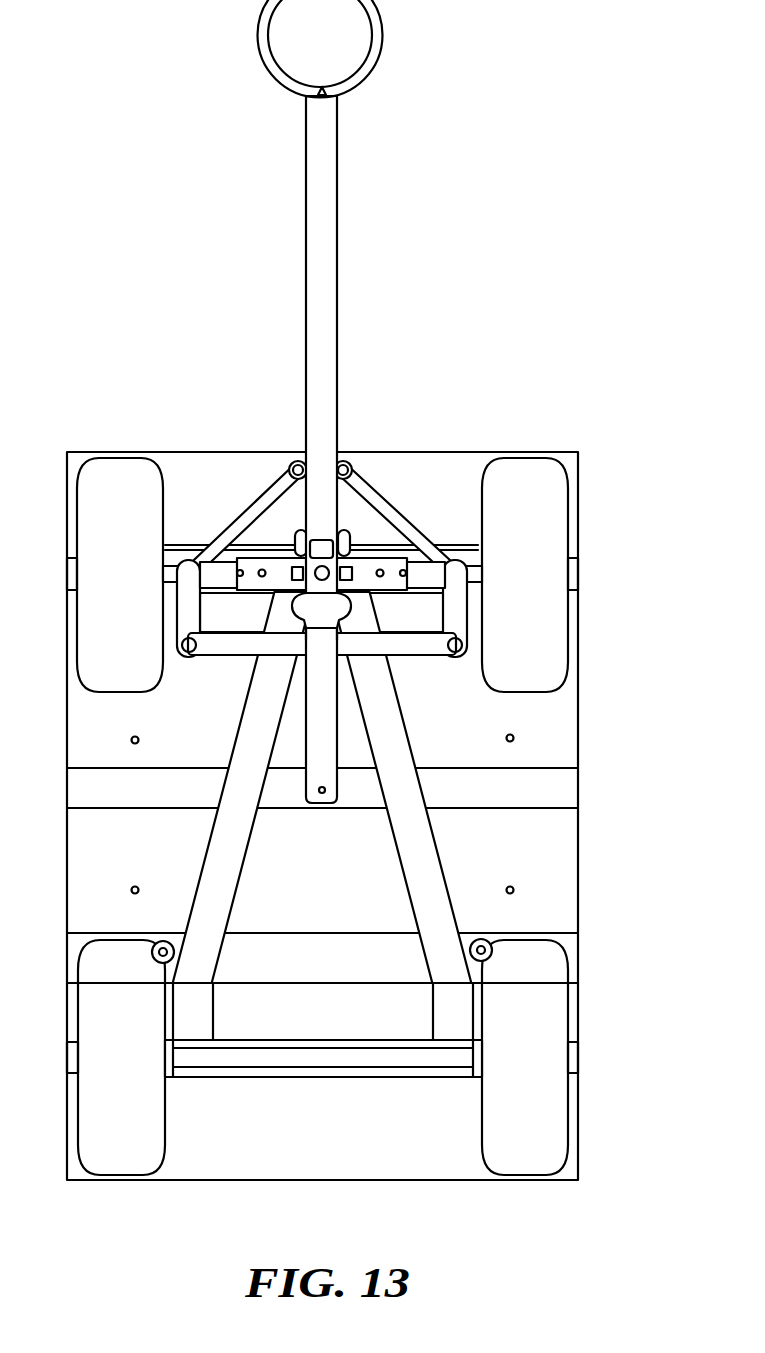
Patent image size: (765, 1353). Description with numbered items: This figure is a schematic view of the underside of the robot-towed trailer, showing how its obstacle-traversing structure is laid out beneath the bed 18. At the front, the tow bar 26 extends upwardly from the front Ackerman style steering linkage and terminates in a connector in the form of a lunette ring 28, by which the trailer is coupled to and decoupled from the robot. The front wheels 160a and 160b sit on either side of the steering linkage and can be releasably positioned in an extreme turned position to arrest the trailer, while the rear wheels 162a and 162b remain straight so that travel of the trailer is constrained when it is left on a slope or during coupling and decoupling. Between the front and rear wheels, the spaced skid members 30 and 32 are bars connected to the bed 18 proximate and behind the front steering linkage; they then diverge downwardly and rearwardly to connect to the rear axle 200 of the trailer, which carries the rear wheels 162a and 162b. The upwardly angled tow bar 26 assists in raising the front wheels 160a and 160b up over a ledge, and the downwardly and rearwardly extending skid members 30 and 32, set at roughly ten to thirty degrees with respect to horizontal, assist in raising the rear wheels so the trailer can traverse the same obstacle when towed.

The bed 18 is at (568, 720).
The tow bar 26 is at (320, 260).
The lunette ring 28 is at (376, 62).
The skid member 30 is at (250, 734).
The skid member 32 is at (393, 734).
The front wheel 160a is at (525, 472).
The front wheel 160b is at (123, 472).
The rear wheel 162a is at (525, 1153).
The rear wheel 162b is at (113, 1158).
The rear axle 200 is at (331, 1058).